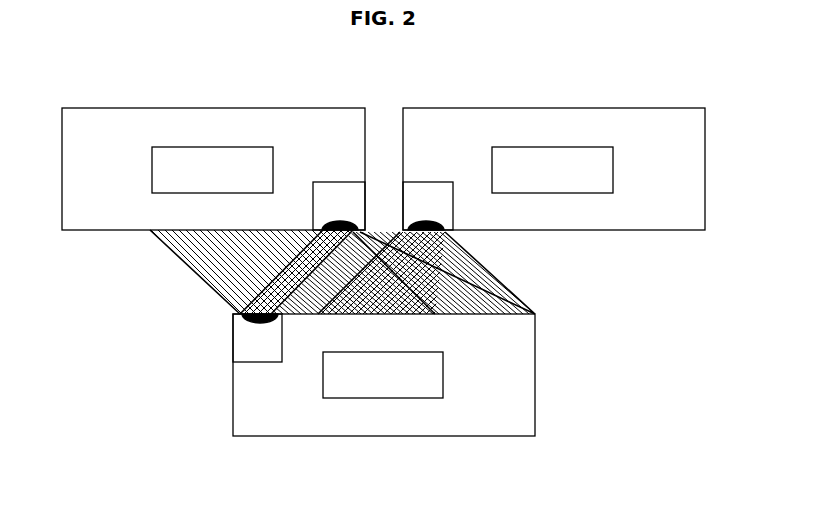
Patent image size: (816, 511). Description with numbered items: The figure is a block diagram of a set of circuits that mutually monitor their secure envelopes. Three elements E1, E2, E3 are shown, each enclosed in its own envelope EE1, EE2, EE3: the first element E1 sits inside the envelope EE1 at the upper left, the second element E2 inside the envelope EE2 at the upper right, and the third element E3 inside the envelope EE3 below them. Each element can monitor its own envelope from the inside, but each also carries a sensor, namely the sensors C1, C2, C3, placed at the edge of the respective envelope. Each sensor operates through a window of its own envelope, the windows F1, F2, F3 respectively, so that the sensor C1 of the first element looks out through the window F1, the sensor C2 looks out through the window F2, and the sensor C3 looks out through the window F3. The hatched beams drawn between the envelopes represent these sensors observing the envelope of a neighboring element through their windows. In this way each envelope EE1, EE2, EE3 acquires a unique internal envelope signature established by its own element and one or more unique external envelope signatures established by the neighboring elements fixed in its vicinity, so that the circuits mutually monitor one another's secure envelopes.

The envelope EE1 is at (214, 108).
The envelope EE2 is at (553, 108).
The envelope EE3 is at (385, 437).
The element E1 is at (212, 170).
The element E2 is at (552, 170).
The element E3 is at (383, 375).
The sensor C1 is at (320, 206).
The sensor C2 is at (446, 206).
The sensor C3 is at (238, 338).
The window F1 is at (322, 226).
The window F2 is at (438, 226).
The window F3 is at (245, 320).